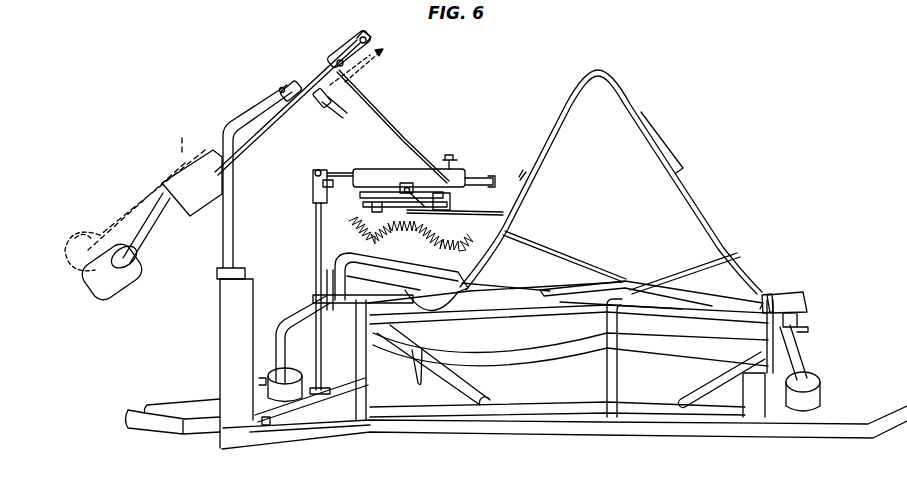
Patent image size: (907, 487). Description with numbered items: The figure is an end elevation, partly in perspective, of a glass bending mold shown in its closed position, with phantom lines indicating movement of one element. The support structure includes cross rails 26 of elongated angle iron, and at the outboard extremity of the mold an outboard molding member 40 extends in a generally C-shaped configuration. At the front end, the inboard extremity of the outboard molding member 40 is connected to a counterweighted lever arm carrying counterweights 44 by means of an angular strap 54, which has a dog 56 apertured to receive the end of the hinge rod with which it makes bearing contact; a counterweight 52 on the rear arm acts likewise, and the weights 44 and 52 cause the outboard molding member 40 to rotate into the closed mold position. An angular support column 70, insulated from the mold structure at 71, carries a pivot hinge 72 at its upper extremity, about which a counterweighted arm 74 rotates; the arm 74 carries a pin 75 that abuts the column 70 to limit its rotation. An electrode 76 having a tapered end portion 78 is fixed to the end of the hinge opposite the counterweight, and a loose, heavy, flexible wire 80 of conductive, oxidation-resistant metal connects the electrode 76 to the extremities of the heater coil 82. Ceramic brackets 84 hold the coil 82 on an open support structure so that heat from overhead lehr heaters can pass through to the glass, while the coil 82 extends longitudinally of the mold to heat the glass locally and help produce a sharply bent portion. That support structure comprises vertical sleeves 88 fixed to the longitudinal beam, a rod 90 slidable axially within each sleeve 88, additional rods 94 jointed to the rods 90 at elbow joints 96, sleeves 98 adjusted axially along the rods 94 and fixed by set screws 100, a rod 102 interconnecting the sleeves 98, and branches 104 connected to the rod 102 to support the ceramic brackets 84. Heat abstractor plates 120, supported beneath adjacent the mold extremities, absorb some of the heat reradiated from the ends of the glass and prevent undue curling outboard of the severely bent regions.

The cross rails 26 is at (744, 430).
The outboard molding members 40 is at (660, 140).
The counterweights 44 is at (286, 368).
The counterweight 52 is at (822, 397).
The angular strap 54 is at (368, 258).
The dog 56 is at (340, 290).
The angular support column 70 is at (222, 245).
The insulation 71 is at (218, 278).
The pivot hinge 72 is at (280, 85).
The counterweighted arm 74 is at (262, 166).
The pin 75 is at (215, 200).
The electrode 76 is at (343, 50).
The tapered end portion 78 is at (365, 32).
The flexible wire 80 is at (394, 120).
The heater coil 82 is at (410, 233).
The ceramic brackets 84 is at (464, 211).
The vertical sleeves 88 is at (317, 370).
The rod 90 is at (316, 246).
The additional rods 94 is at (337, 170).
The elbow joints 96 is at (313, 177).
The sleeves 98 is at (375, 168).
The set screws 100 is at (450, 159).
The rod 102 is at (408, 180).
The branches 104 is at (360, 202).
The heat abstractor plates 120 is at (627, 281).